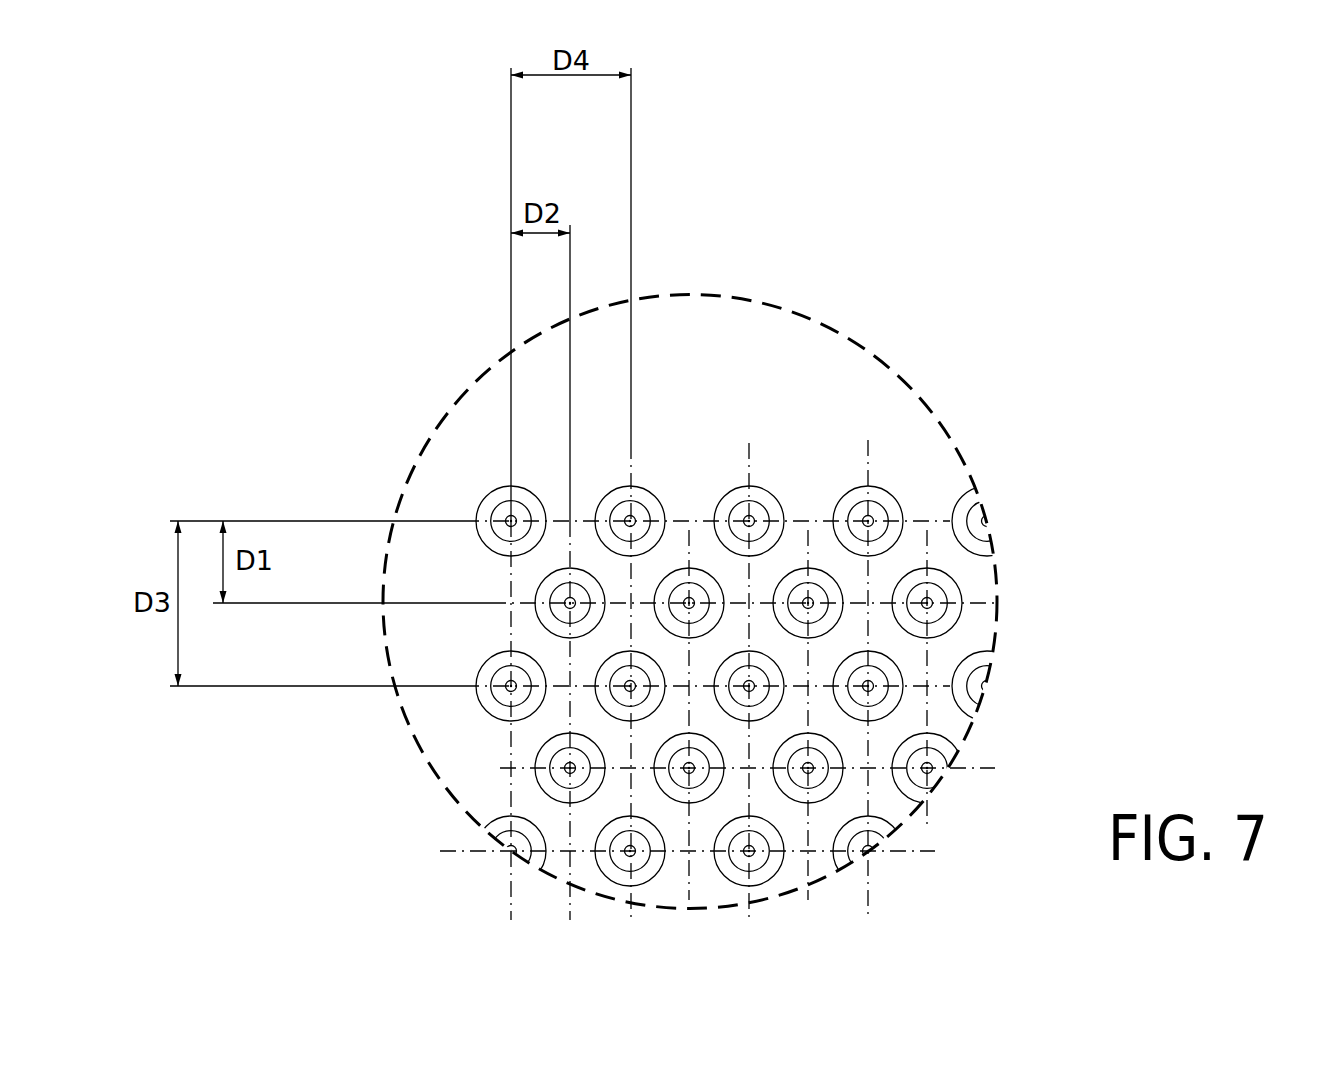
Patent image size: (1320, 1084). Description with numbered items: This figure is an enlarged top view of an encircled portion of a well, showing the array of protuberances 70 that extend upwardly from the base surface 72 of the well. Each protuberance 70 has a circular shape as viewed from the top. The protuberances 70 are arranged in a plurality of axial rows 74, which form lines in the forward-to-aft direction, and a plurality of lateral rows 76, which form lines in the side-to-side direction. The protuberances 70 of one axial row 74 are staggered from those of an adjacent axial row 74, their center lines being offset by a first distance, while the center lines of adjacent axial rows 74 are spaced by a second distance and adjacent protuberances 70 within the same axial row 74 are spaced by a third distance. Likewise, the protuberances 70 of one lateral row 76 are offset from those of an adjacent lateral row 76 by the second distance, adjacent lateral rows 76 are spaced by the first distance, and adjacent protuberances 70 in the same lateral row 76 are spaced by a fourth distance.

The protuberance 70 is at (717, 863).
The base surface 72 is at (930, 438).
The axial row 74 is at (640, 467).
The lateral row 76 is at (1008, 685).